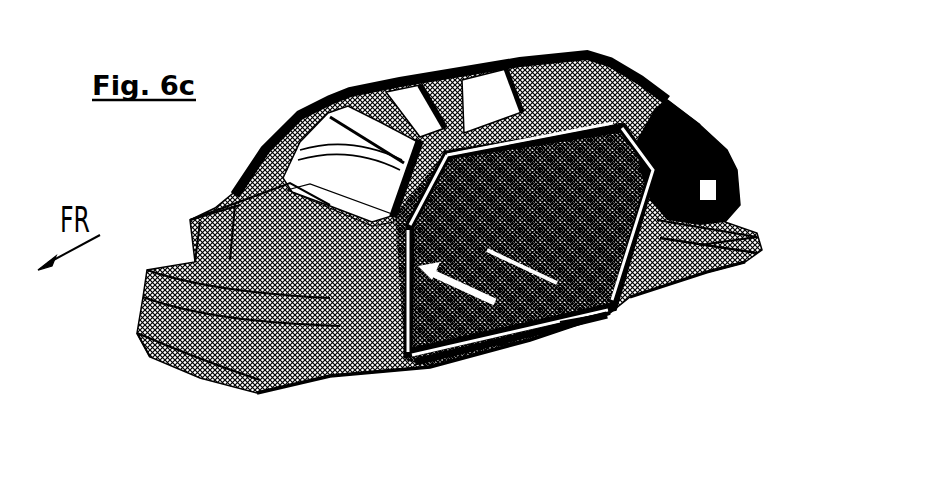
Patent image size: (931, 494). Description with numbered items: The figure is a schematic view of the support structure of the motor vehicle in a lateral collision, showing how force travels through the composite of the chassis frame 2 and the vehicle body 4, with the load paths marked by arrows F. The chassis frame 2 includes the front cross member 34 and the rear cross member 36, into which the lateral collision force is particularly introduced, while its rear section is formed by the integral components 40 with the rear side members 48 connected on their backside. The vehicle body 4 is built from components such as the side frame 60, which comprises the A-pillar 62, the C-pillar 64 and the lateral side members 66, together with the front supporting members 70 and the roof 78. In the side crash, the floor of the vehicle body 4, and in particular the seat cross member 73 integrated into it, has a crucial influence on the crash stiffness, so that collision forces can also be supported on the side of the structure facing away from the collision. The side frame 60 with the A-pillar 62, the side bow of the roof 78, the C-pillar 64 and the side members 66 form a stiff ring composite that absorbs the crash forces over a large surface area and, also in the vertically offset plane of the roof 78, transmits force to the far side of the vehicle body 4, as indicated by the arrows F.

The chassis frame 2 is at (127, 344).
The vehicle body 4 is at (662, 71).
The front cross member 34 is at (383, 367).
The rear cross member 36 is at (573, 315).
The integral components 40 is at (687, 283).
The rear side members 48 is at (723, 250).
The side frame 60 is at (600, 73).
The A-pillar 62 is at (330, 100).
The C-pillar 64 is at (673, 118).
The lateral side members 66 is at (563, 315).
The front supporting members 70 is at (209, 214).
The seat cross member 73 is at (520, 337).
The roof 78 is at (523, 62).
The arrows F is at (405, 82).